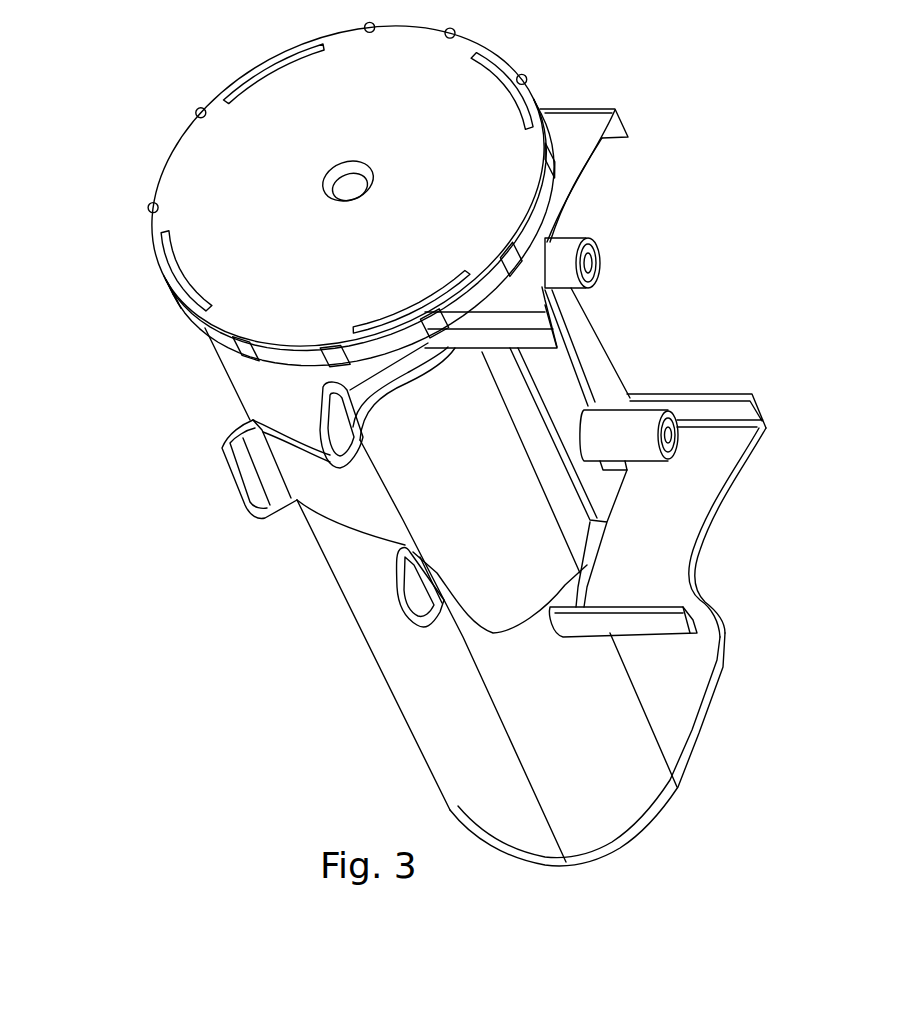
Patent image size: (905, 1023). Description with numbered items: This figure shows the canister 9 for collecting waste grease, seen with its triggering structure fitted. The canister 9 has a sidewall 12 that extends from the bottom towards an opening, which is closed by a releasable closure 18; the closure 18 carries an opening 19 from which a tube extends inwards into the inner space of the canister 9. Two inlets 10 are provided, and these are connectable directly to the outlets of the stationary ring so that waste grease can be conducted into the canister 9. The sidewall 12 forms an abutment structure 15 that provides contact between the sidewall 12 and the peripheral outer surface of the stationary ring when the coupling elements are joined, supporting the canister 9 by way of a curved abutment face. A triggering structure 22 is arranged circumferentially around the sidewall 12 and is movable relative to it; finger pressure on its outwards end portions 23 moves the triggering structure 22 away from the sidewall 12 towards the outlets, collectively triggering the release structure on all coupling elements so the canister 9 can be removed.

The canister 9 is at (99, 59).
The inlets 10 is at (650, 418).
The sidewall 12 is at (340, 592).
The abutment structure 15 is at (580, 128).
The releasable closure 18 is at (190, 192).
The opening 19 is at (350, 185).
The triggering structure 22 is at (330, 534).
The outwards end portions 23 is at (240, 467).